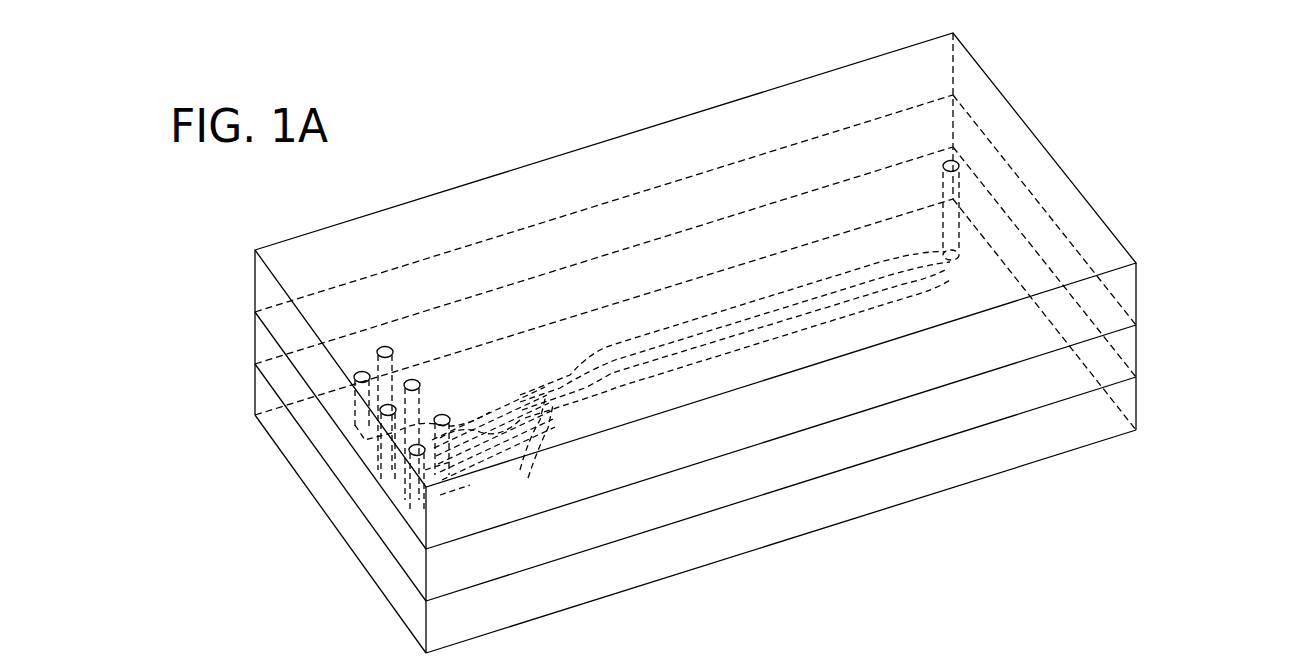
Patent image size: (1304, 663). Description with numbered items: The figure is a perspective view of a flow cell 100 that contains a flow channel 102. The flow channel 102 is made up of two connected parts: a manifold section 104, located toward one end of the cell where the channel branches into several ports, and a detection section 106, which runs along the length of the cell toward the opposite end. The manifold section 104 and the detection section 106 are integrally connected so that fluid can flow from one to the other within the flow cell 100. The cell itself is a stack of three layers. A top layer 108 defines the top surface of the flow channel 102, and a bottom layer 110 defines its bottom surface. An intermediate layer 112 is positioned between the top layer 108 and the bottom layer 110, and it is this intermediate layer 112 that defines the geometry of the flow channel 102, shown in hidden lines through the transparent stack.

The flow cell 100 is at (759, 343).
The flow channel 102 is at (792, 359).
The manifold section 104 is at (433, 373).
The detection section 106 is at (732, 185).
The top layer 108 is at (1128, 292).
The bottom layer 110 is at (1137, 405).
The intermediate layer 112 is at (1137, 353).